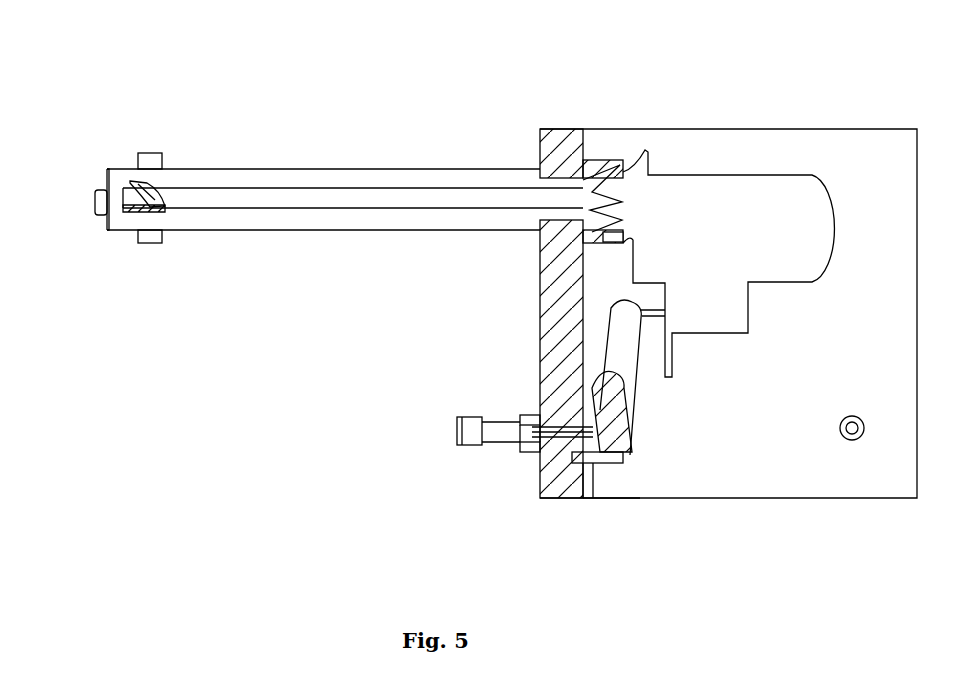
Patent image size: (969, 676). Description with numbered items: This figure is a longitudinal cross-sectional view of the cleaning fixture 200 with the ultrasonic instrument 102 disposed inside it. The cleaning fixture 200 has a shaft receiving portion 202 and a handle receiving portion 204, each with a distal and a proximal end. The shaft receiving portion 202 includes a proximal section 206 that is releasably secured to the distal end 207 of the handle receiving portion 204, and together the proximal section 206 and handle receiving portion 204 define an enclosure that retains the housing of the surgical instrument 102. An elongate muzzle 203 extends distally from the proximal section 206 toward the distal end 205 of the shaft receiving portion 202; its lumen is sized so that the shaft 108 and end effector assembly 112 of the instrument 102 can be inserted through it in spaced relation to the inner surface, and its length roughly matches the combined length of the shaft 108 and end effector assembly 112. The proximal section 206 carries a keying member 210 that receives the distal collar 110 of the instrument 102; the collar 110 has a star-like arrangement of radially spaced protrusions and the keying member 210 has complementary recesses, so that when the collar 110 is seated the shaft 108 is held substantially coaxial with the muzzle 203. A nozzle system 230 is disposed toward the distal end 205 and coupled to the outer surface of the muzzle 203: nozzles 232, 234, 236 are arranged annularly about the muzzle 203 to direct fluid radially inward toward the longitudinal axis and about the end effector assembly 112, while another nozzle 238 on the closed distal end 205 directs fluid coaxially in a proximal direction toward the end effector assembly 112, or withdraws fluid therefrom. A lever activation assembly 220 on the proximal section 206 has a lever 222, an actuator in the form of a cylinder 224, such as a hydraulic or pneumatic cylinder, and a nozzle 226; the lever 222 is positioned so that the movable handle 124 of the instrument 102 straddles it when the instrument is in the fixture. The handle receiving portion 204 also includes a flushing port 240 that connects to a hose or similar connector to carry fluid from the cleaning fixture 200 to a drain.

The cleaning fixture 200 is at (450, 65).
The ultrasonic instrument 102 is at (728, 198).
The shaft 108 is at (316, 208).
The distal collar 110 is at (622, 170).
The end effector assembly 112 is at (160, 182).
The movable handle 124 is at (600, 347).
The shaft receiving portion 202 is at (544, 130).
The elongate muzzle 203 is at (310, 168).
The handle receiving portion 204 is at (676, 128).
The distal end of shaft receiving portion 205 is at (107, 172).
The proximal section 206 is at (575, 498).
The distal end of handle receiving portion 207 is at (605, 499).
The keying member 210 is at (596, 160).
The lever activation assembly 220 is at (512, 474).
The lever 222 is at (592, 455).
The cylinder 224 is at (493, 421).
The nozzle 226 is at (457, 430).
The nozzle system 230 is at (102, 145).
The nozzle 232 is at (147, 153).
The nozzle 234 is at (150, 243).
The nozzle 236 is at (107, 231).
The nozzle 238 is at (93, 204).
The flushing port 240 is at (852, 440).